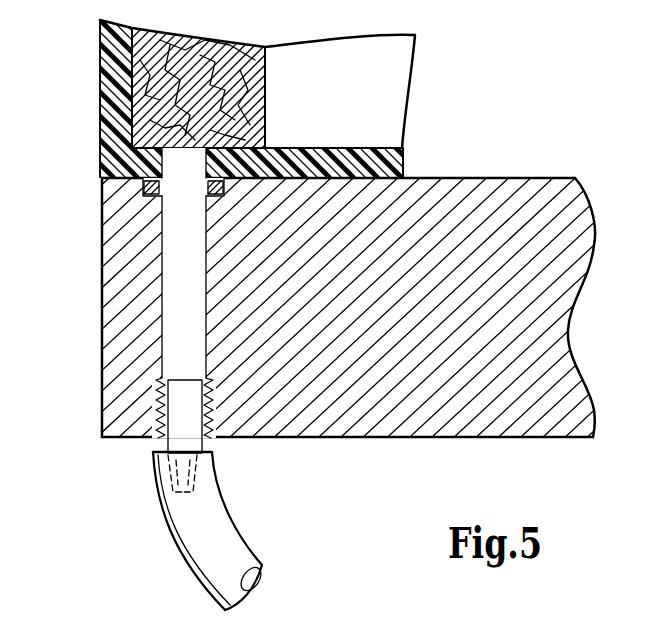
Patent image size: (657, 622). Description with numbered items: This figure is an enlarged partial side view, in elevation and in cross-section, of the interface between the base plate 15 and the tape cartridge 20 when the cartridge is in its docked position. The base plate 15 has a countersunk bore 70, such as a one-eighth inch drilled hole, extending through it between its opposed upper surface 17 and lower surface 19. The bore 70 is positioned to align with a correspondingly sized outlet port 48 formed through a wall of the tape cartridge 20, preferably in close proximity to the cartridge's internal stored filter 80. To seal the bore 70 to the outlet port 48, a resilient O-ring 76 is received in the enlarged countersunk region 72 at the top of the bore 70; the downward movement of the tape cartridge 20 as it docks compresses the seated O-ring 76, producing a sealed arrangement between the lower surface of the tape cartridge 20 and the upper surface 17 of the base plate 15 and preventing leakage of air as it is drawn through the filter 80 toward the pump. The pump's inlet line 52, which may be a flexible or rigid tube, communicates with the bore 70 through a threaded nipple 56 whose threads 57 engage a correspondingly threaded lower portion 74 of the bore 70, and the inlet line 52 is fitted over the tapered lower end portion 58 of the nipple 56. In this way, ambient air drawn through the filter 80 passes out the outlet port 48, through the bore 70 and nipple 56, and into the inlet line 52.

The base plate 15 is at (412, 430).
The upper surface 17 is at (498, 178).
The lower surface 19 is at (552, 440).
The tape cartridge 20 is at (422, 78).
The outlet port 48 is at (245, 88).
The inlet line 52 is at (193, 532).
The threaded nipple 56 is at (215, 447).
The threads 57 is at (157, 400).
The tapered lower end portion 58 is at (170, 474).
The countersunk bore 70 is at (188, 275).
The enlarged countersunk region 72 is at (115, 162).
The threaded lower portion 74 is at (184, 427).
The O-ring 76 is at (140, 187).
The filter 80 is at (190, 160).